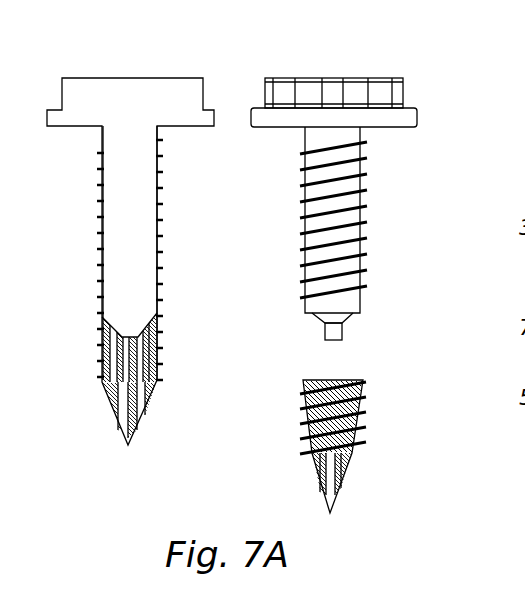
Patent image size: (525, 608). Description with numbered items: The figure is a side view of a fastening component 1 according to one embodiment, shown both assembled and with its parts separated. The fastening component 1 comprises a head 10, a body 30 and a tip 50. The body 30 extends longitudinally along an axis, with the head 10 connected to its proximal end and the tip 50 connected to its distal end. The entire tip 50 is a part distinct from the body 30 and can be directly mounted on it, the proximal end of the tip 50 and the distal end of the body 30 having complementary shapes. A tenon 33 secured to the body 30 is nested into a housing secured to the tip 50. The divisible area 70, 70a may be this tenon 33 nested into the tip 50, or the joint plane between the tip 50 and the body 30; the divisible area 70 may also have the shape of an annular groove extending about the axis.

The fastening component 1 is at (140, 56).
The head 10 is at (358, 78).
The body 30 is at (107, 213).
The tenon 33 is at (343, 333).
The tip 50 is at (103, 368).
The divisible area 70 is at (115, 316).
The connecting element 70a is at (333, 331).